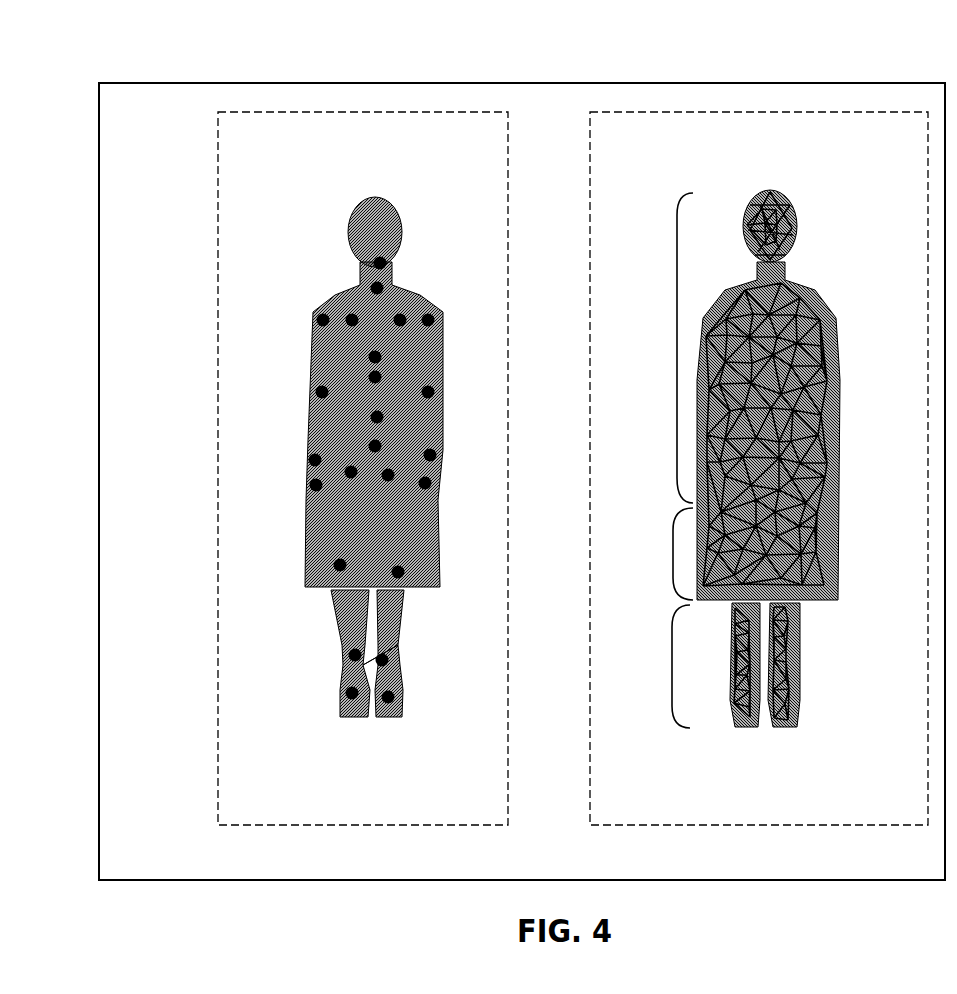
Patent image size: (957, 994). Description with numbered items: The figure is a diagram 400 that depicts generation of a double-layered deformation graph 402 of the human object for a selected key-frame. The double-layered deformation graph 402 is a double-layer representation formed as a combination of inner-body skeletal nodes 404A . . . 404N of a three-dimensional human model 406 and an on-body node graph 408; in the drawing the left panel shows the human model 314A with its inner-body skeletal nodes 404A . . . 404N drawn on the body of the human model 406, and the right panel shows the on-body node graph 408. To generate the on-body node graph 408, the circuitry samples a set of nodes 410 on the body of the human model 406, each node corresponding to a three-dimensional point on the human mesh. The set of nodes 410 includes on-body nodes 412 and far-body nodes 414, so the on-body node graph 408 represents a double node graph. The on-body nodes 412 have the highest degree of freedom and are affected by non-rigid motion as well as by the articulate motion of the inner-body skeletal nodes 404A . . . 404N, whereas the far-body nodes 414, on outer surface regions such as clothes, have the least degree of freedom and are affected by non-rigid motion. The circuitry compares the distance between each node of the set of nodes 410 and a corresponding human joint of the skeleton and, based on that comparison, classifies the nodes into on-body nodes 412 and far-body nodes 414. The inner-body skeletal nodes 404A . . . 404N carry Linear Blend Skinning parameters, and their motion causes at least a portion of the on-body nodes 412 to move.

The diagram 400 is at (96, 80).
The double-layered deformation graph 402 is at (522, 481).
The 3D human model 314A is at (363, 468).
The inner-body skeletal node 404A is at (377, 266).
The inner-body skeletal node 404N is at (430, 318).
The 3D human model 406 is at (322, 302).
The on-body node graph 408 is at (759, 468).
The set of nodes 410 is at (832, 533).
The on-body nodes 412 is at (677, 348).
The far-body nodes 414 is at (673, 552).